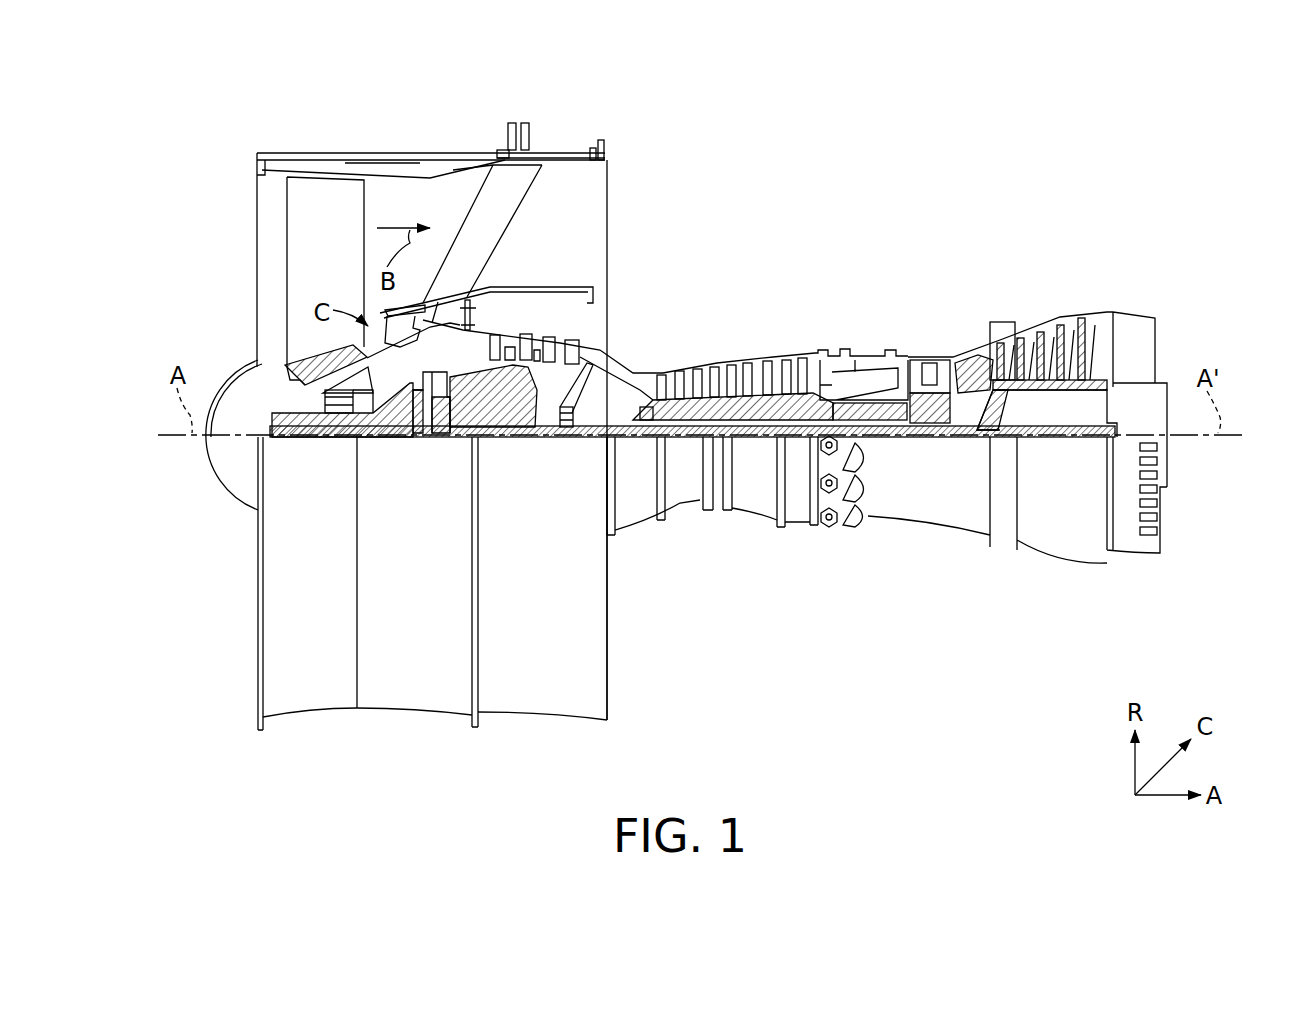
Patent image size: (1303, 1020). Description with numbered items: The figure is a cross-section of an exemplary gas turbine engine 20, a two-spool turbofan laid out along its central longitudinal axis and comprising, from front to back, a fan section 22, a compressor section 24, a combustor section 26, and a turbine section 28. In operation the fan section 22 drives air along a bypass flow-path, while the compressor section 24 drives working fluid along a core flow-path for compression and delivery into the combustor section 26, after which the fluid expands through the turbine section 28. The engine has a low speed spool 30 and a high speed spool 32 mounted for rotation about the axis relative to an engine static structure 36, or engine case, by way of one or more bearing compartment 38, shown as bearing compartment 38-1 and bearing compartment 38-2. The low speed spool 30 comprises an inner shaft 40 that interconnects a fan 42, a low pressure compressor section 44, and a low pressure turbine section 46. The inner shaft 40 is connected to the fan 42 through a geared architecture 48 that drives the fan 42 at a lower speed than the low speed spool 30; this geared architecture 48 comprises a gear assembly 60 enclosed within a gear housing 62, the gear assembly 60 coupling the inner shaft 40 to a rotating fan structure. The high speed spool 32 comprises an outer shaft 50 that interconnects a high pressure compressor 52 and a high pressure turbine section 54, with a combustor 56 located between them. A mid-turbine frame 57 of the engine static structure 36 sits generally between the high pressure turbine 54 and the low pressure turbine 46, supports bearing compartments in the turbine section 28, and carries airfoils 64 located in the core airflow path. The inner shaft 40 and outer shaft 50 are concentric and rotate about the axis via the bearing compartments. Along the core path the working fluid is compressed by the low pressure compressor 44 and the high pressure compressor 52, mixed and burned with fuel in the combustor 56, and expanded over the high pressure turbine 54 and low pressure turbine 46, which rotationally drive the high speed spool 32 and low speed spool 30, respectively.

The gas turbine engine 20 is at (912, 144).
The fan section 22 is at (450, 136).
The compressor section 24 is at (480, 251).
The combustor section 26 is at (922, 251).
The turbine section 28 is at (1110, 251).
The low speed spool 30 is at (760, 445).
The high speed spool 32 is at (806, 395).
The engine static structure 36 is at (222, 741).
The bearing compartment 38 is at (970, 400).
The bearing compartment 38-1 is at (330, 413).
The bearing compartment 38-2 is at (565, 415).
The inner shaft 40 is at (627, 437).
The fan 42 is at (327, 280).
The low pressure compressor section 44 is at (545, 343).
The low pressure turbine section 46 is at (1057, 320).
The geared architecture 48 is at (433, 470).
The outer shaft 50 is at (857, 420).
The high pressure compressor 52 is at (752, 385).
The high pressure turbine section 54 is at (932, 360).
The combustor 56 is at (872, 372).
The mid-turbine frame 57 is at (972, 400).
The gear assembly 60 is at (450, 407).
The gear housing 62 is at (450, 380).
The airfoils 64 is at (973, 365).